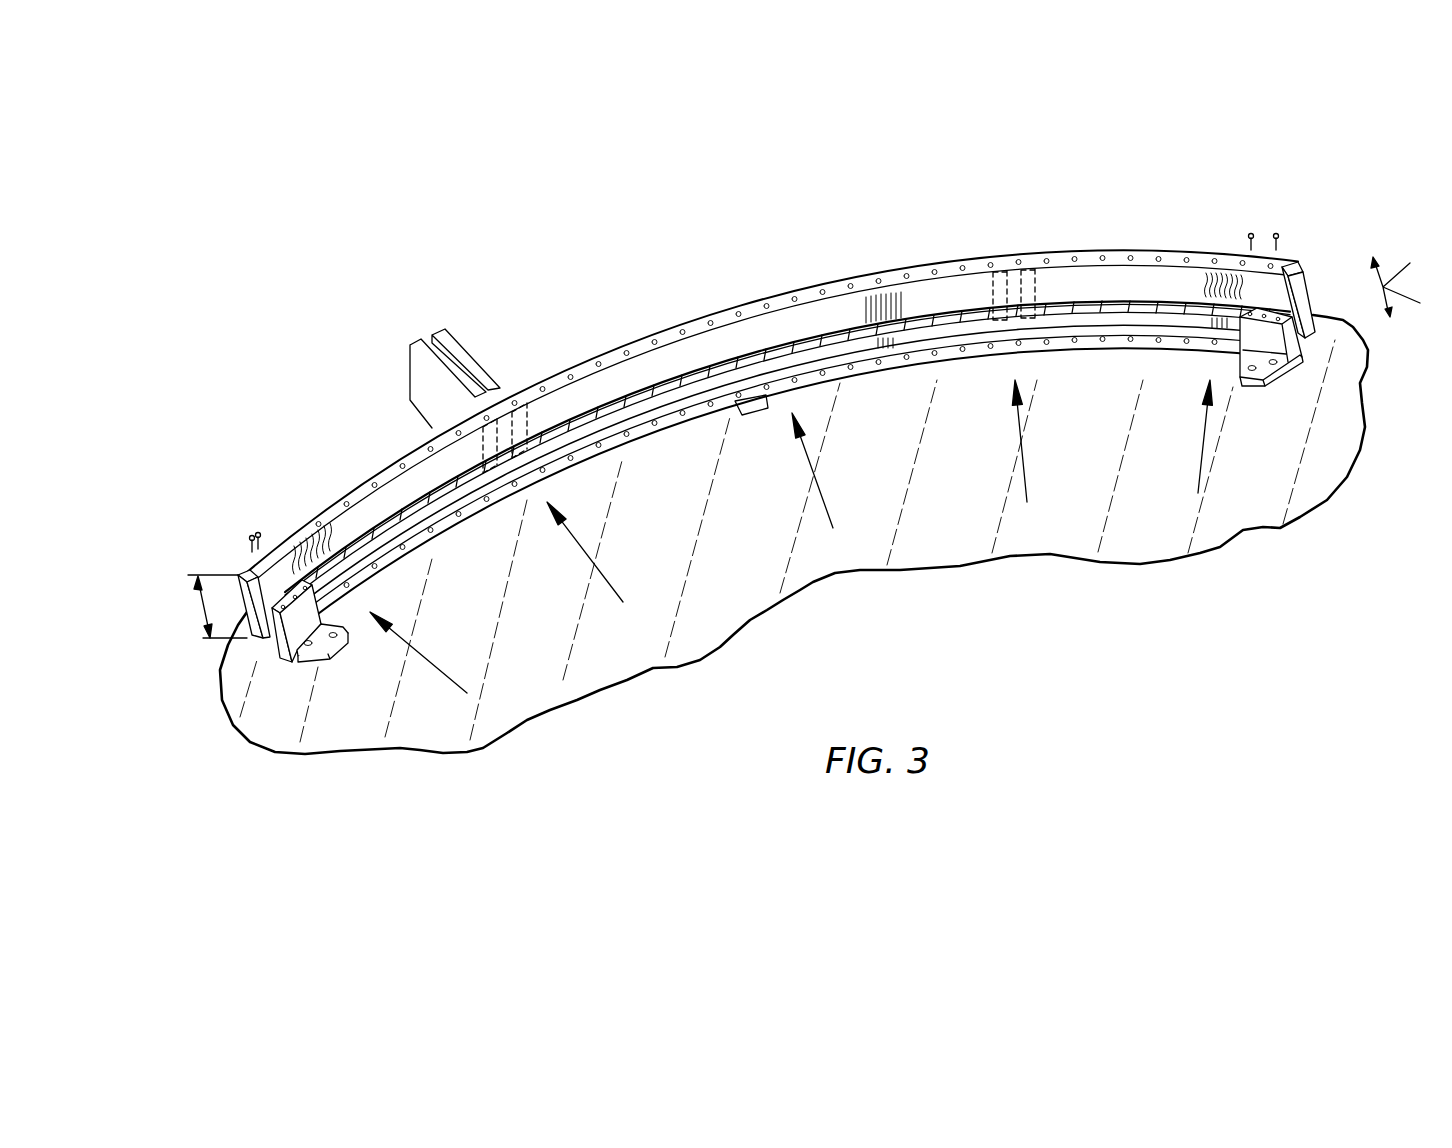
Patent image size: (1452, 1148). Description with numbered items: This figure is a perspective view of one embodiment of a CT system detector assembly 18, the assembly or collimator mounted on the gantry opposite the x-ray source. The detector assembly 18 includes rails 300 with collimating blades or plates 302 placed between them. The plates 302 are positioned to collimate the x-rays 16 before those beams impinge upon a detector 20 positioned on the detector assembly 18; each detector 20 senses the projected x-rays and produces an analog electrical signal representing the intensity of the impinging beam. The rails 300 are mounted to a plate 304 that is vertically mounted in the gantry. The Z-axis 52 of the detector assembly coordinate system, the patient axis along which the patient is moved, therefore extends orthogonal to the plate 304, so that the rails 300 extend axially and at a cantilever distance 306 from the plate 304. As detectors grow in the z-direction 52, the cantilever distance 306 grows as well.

The x-rays 16 is at (592, 571).
The detector assembly 18 is at (683, 305).
The detector 20 is at (463, 343).
The Z-axis 52 is at (1411, 284).
The rails 300 is at (1308, 285).
The collimating plates 302 is at (1040, 256).
The plate 304 is at (737, 602).
The cantilever distance 306 is at (202, 608).